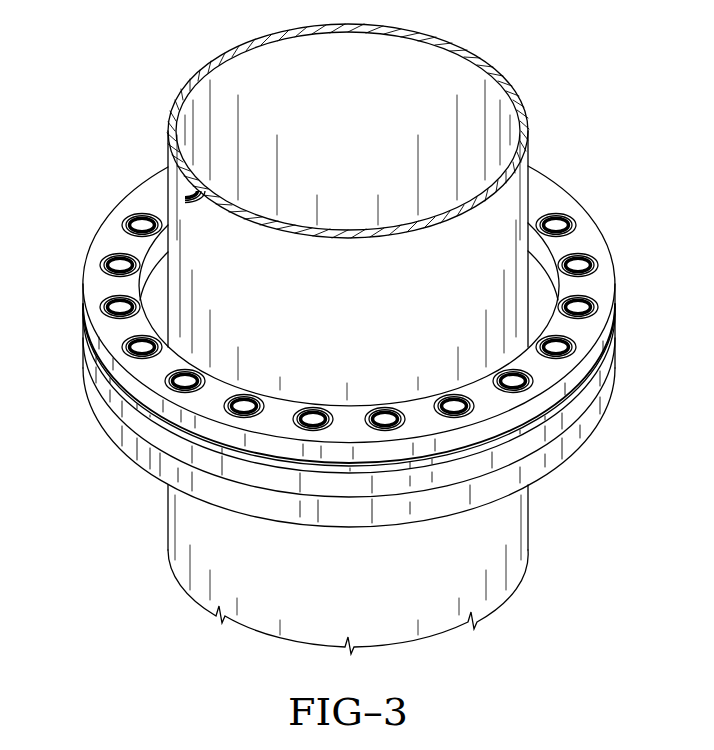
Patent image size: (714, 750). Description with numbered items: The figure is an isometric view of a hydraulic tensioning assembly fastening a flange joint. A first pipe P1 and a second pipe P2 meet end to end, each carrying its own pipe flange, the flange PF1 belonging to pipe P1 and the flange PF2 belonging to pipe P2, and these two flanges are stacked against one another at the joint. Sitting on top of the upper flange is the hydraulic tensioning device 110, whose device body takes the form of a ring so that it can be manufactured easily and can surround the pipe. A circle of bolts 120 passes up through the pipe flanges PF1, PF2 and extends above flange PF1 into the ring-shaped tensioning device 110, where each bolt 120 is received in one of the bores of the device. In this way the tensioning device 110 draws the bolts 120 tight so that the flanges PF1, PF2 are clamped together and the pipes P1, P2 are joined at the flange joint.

The hydraulic tensioning device 110 is at (112, 242).
The bolts 120 is at (117, 305).
The pipe P1 is at (233, 51).
The pipe P2 is at (198, 602).
The pipe flange PF1 is at (553, 428).
The pipe flange PF2 is at (488, 490).